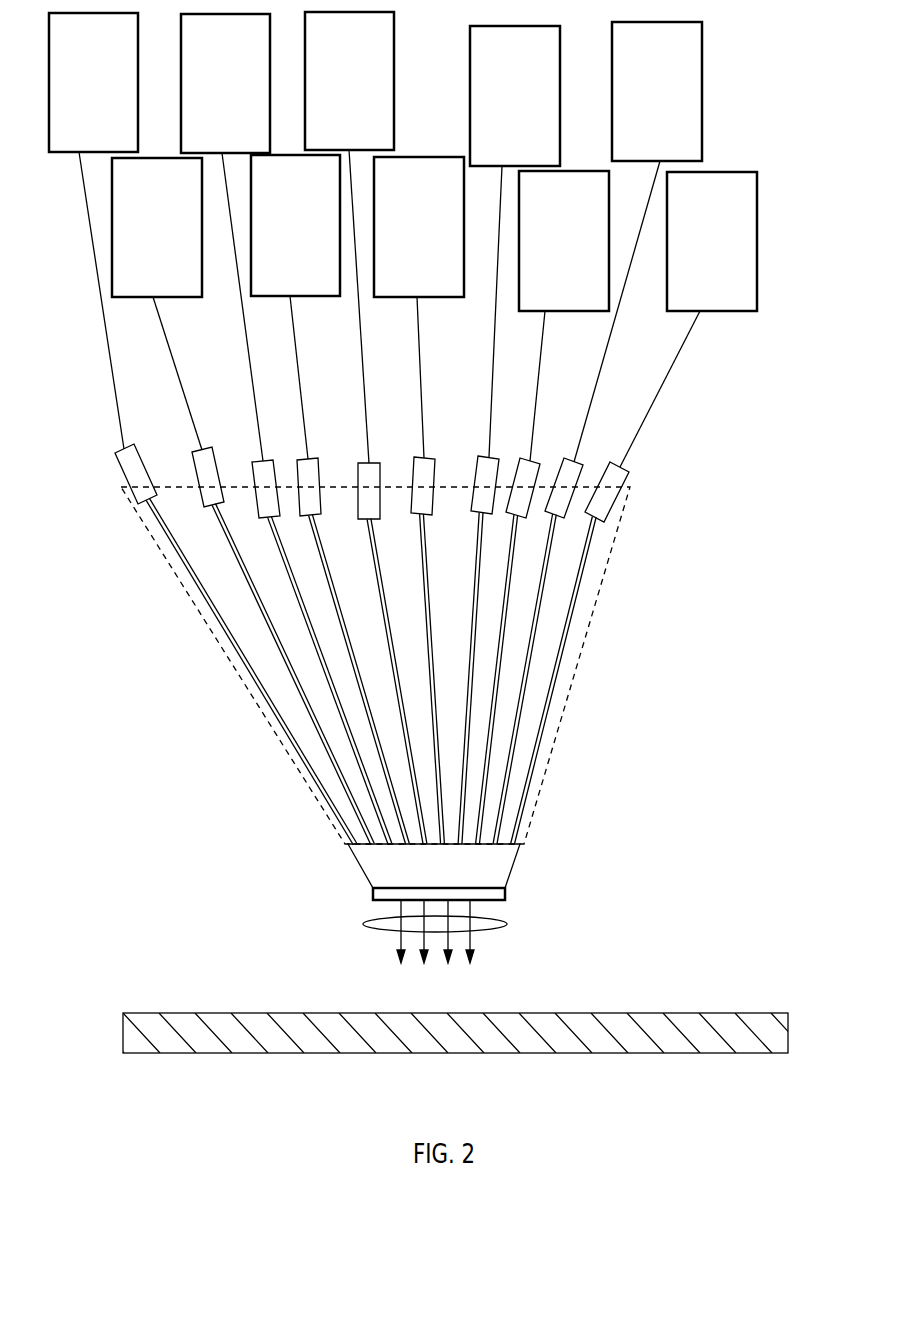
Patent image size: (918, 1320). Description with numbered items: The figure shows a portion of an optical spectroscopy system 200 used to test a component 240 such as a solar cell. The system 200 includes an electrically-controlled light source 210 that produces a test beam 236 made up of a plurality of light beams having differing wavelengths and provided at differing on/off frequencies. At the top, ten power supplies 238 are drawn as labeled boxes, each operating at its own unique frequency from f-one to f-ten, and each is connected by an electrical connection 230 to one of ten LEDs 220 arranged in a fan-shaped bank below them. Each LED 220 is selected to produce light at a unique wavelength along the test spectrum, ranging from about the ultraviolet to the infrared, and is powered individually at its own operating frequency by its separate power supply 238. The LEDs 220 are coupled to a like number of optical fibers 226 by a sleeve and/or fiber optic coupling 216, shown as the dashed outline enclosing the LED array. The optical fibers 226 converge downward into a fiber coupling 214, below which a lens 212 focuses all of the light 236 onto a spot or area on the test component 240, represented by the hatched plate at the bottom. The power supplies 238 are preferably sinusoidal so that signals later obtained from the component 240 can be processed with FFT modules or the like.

The optical spectroscopy system 200 is at (200, 1110).
The electrically-controlled light source 210 is at (126, 710).
The lens 212 is at (373, 893).
The fiber coupling 214 is at (515, 872).
The sleeve and/or fiber optic coupling 216 is at (280, 740).
The LEDs 220 is at (200, 484).
The optical fibers 226 is at (553, 652).
The electrical connections 230 is at (668, 375).
The test beam 236 is at (507, 924).
The power supplies 238 is at (712, 172).
The component 240 is at (648, 1053).